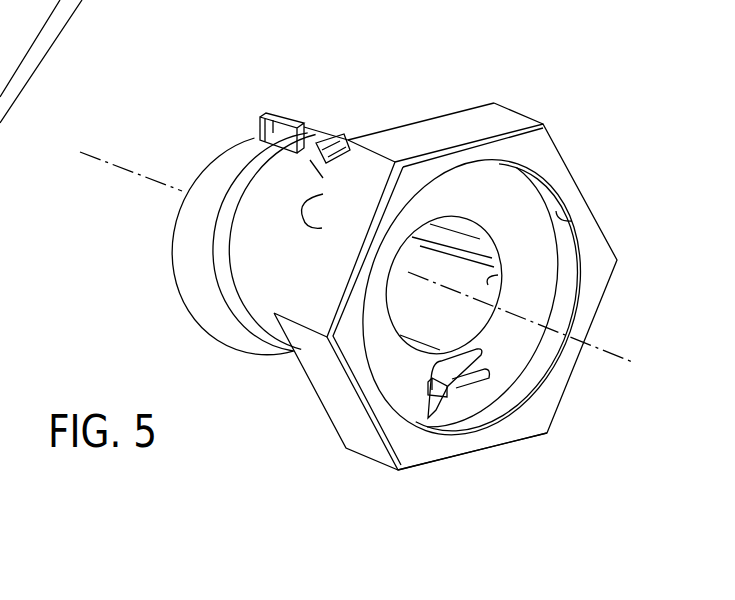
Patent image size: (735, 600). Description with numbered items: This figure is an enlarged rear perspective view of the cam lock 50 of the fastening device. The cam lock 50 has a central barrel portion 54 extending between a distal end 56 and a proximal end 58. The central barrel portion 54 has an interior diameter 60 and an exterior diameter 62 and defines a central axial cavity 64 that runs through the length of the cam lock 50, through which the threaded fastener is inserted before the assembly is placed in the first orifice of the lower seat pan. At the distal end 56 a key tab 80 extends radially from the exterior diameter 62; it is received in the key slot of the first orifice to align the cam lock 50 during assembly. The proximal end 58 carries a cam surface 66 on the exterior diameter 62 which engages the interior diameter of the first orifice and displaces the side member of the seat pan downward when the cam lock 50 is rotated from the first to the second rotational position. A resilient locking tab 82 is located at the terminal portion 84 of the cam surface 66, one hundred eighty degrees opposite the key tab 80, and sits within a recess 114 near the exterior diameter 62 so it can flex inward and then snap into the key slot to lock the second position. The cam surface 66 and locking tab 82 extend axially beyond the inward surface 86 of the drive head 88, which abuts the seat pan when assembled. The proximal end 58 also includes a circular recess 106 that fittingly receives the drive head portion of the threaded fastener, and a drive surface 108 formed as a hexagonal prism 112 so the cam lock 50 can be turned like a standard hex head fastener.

The cam lock 50 is at (415, 445).
The central barrel portion 54 is at (260, 328).
The distal end 56 is at (187, 287).
The proximal end 58 is at (540, 147).
The interior diameter 60 is at (500, 283).
The exterior diameter 62 is at (310, 178).
The central axial cavity 64 is at (445, 290).
The cam surface 66 is at (505, 403).
The key tab 80 is at (273, 118).
The locking tab 82 is at (450, 395).
The terminal portion 84 is at (470, 358).
The inward surface 86 is at (332, 192).
The drive head 88 is at (492, 123).
The circular recess 106 is at (573, 220).
The drive surface 108 is at (305, 273).
The hexagonal prism 112 is at (443, 131).
The recess 114 is at (400, 397).